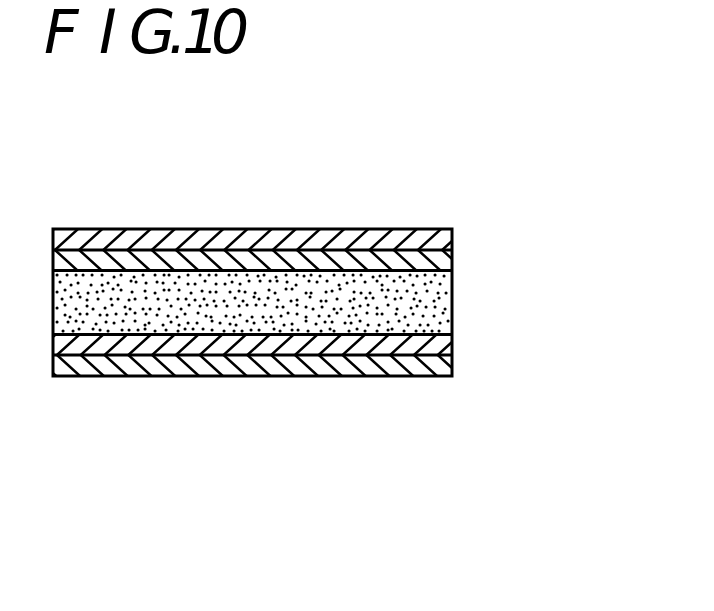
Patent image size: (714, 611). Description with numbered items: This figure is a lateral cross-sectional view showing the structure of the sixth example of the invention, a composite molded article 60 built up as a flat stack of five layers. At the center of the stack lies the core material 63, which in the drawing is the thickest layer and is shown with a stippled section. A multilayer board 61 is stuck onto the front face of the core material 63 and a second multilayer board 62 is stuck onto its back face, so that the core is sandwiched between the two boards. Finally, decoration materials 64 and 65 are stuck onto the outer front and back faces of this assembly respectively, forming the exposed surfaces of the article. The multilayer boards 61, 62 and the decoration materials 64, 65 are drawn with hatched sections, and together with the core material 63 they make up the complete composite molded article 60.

The composite molded article 60 is at (201, 214).
The multilayer board 61 is at (432, 257).
The multilayer board 62 is at (449, 339).
The core material 63 is at (440, 301).
The decoration material 64 is at (376, 237).
The decoration material 65 is at (390, 366).